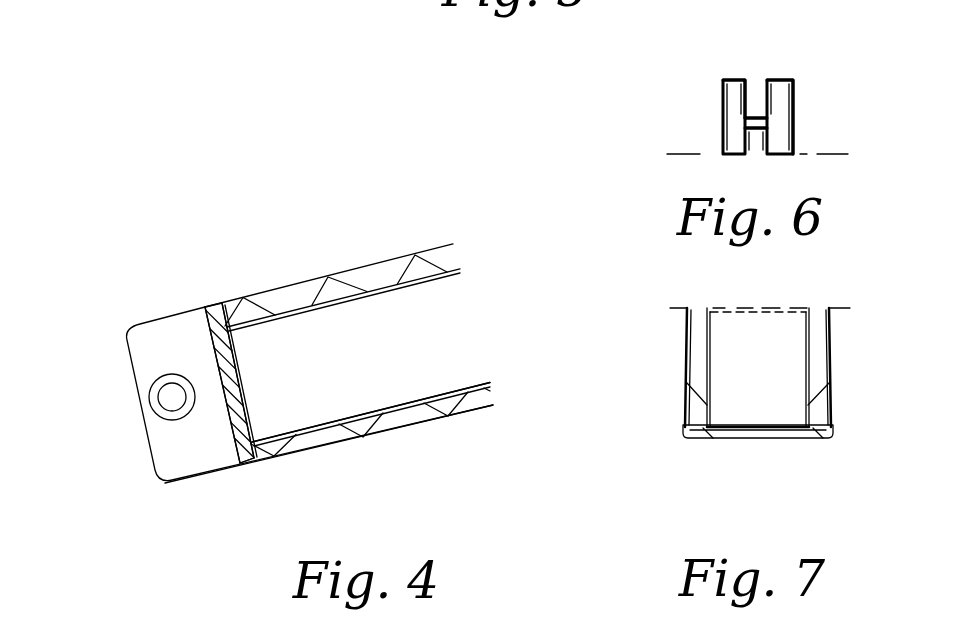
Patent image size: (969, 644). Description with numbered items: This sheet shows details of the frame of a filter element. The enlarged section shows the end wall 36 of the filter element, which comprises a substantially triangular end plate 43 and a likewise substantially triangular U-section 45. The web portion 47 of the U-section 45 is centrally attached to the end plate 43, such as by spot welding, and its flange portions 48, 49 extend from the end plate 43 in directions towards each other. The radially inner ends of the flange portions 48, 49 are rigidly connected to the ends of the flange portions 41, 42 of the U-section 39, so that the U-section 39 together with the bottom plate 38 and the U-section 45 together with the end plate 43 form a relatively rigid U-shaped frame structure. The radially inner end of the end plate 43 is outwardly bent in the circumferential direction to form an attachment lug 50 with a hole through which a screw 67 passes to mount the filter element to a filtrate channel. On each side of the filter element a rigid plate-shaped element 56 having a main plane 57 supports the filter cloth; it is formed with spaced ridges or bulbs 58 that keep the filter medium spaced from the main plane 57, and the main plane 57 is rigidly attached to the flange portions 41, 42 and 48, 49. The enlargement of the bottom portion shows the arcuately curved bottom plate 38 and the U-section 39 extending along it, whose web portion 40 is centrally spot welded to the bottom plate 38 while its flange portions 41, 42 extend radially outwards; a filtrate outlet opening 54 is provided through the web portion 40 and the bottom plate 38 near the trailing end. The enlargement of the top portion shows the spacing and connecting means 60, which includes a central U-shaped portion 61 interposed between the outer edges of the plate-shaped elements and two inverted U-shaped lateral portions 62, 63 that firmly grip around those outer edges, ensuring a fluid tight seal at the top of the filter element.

In FIG. 4, the end wall 36 is at (201, 341).
In FIG. 4, the bottom plate 38 is at (373, 278).
In FIG. 7, the bottom plate 38 is at (828, 441).
In FIG. 7, the U-section 39 is at (718, 413).
In FIG. 4, the web portion 40 is at (398, 368).
In FIG. 7, the web portion 40 is at (785, 423).
In FIG. 4, the flange portion 41 is at (377, 295).
In FIG. 7, the flange portion 41 is at (708, 385).
In FIG. 4, the flange portion 42 is at (396, 404).
In FIG. 7, the flange portion 42 is at (808, 385).
In FIG. 4, the end plate 43 is at (222, 425).
In FIG. 4, the U-section 45 is at (254, 385).
In FIG. 4, the web portion 47 is at (207, 358).
In FIG. 4, the flange portion 48 is at (270, 434).
In FIG. 4, the flange portion 49 is at (258, 321).
In FIG. 4, the attachment lug 50 is at (178, 452).
In FIG. 7, the filtrate outlet opening 54 is at (768, 450).
In FIG. 4, the plate-shaped element 56 is at (404, 444).
In FIG. 4, the main plane 57 is at (287, 306).
In FIG. 4, the ridges or bulbs 58 is at (347, 440).
In FIG. 6, the spacing and connecting means 60 is at (748, 69).
In FIG. 6, the central U-shaped portion 61 is at (751, 140).
In FIG. 6, the inverted U-shaped lateral portion 62 is at (713, 76).
In FIG. 6, the inverted U-shaped lateral portion 63 is at (804, 73).
In FIG. 4, the screw 67 is at (160, 390).